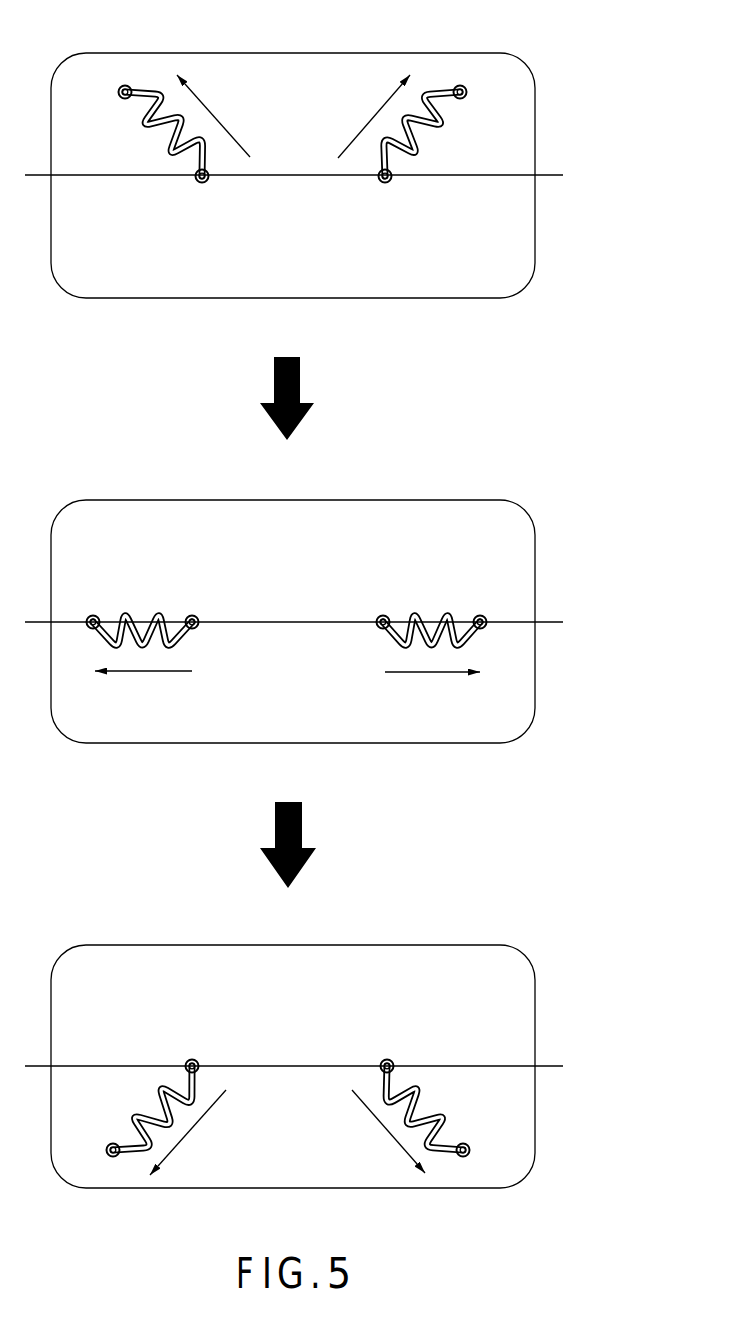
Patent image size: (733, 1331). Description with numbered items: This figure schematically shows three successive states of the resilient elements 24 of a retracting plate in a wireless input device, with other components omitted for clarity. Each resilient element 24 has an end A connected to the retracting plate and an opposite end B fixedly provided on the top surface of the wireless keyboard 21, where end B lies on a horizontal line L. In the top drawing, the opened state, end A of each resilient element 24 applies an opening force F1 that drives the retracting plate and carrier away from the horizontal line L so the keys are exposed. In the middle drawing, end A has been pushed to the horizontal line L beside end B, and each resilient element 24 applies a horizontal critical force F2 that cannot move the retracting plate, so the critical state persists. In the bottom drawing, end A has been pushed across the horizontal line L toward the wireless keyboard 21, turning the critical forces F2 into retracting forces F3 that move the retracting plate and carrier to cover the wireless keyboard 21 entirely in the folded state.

The wireless keyboard 21 is at (538, 129).
The resilient element 24 is at (441, 92).
The horizontal line L is at (304, 621).
The end A of resilient element A is at (287, 628).
The end B of resilient element B is at (295, 621).
The opening force F1 is at (293, 116).
The critical force F2 is at (287, 690).
The retracting force F3 is at (287, 1132).